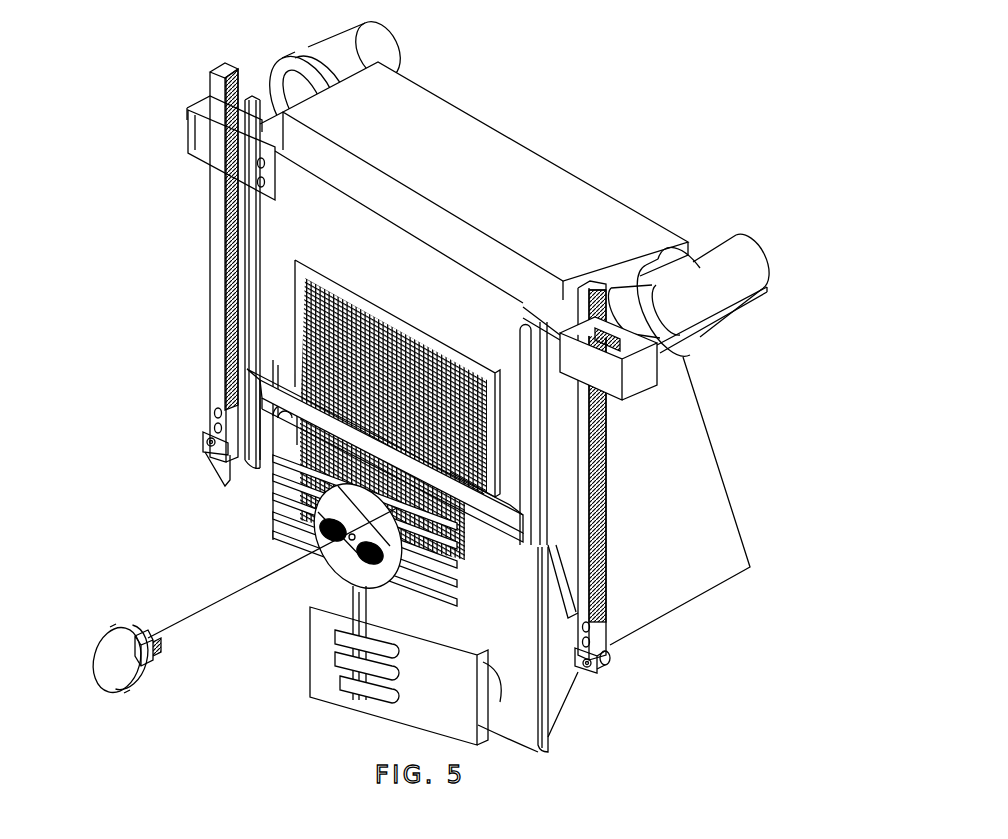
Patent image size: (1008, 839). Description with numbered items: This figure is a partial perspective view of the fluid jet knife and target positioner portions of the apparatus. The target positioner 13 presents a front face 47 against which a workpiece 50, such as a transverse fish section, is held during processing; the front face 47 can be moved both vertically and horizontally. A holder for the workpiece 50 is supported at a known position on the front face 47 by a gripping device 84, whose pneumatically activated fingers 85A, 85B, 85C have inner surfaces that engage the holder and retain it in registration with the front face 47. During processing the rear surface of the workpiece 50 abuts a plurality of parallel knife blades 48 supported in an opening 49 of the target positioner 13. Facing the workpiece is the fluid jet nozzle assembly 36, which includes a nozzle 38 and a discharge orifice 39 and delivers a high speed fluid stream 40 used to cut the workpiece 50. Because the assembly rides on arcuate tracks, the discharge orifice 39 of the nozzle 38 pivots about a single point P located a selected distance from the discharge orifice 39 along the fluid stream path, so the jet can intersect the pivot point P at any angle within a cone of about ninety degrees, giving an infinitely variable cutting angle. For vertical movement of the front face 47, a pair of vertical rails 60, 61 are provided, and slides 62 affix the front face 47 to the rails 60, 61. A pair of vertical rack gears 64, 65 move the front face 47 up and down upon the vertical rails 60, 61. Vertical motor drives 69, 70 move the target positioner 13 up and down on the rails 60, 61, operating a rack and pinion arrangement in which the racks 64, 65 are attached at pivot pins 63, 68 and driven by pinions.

The target positioner 13 is at (591, 144).
The fluid jet nozzle assembly 36 is at (122, 655).
The nozzle 38 is at (148, 640).
The discharge orifice 39 is at (162, 641).
The fluid stream 40 is at (237, 590).
The front face 47 is at (522, 672).
The knife blades 48 is at (300, 462).
The opening 49 is at (295, 415).
The workpiece 50 is at (265, 465).
The vertical rail 60 is at (245, 262).
The vertical rail 61 is at (523, 318).
The slides 62 is at (513, 525).
The pivot pin 63 is at (600, 665).
The vertical rack gear 64 is at (212, 78).
The vertical rack gear 65 is at (607, 517).
The pivot pin 68 is at (205, 441).
The vertical motor drive 69 is at (336, 42).
The vertical motor drive 70 is at (730, 317).
The gripping device 84 is at (437, 688).
The pneumatically activated finger 85A is at (352, 688).
The pneumatically activated finger 85B is at (345, 663).
The pneumatically activated finger 85C is at (350, 637).
The pivot point P is at (290, 508).